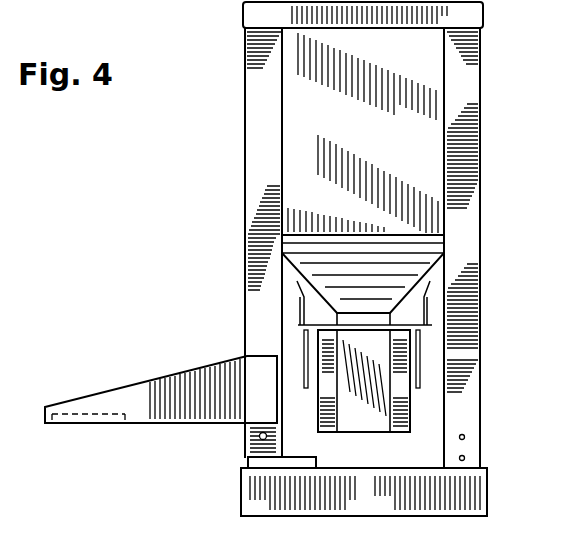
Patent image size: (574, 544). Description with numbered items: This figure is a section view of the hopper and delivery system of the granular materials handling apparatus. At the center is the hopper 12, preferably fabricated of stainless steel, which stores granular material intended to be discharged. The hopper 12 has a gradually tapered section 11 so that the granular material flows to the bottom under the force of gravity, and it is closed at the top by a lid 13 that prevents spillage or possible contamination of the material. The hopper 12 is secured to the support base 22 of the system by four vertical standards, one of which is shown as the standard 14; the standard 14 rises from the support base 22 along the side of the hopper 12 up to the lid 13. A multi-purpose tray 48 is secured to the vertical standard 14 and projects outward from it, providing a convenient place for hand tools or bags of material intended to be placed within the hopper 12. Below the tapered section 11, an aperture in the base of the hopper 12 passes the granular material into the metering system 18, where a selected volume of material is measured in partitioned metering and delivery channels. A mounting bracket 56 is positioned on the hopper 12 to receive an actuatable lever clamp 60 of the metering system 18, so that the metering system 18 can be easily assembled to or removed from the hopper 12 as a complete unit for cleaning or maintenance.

The tapered section 11 is at (425, 250).
The hopper 12 is at (423, 82).
The lid 13 is at (468, 14).
The vertical standard 14 is at (245, 92).
The metering system 18 is at (413, 410).
The support base 22 is at (473, 497).
The multi-purpose tray 48 is at (150, 393).
The mounting bracket 56 is at (297, 297).
The actuatable lever clamp 60 is at (300, 348).